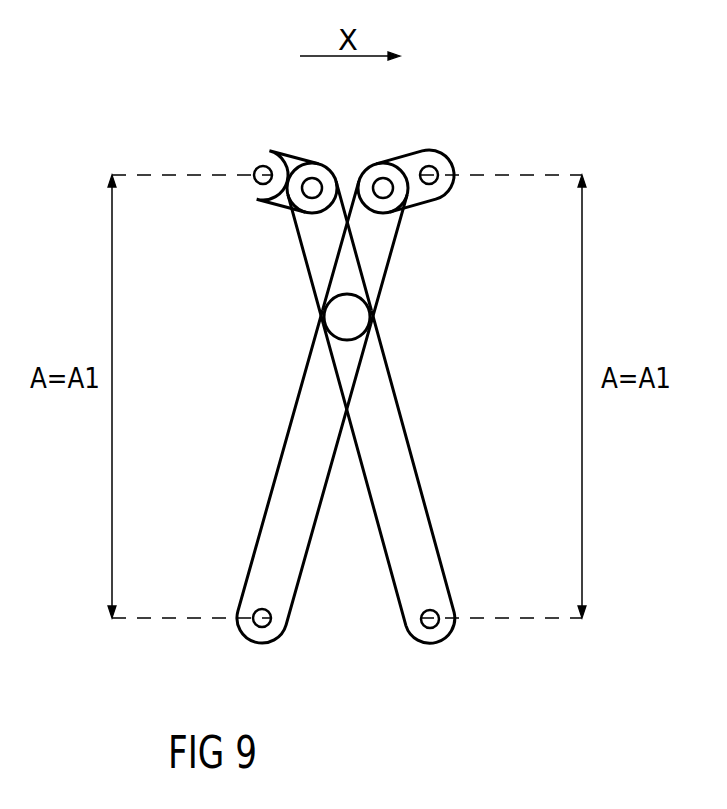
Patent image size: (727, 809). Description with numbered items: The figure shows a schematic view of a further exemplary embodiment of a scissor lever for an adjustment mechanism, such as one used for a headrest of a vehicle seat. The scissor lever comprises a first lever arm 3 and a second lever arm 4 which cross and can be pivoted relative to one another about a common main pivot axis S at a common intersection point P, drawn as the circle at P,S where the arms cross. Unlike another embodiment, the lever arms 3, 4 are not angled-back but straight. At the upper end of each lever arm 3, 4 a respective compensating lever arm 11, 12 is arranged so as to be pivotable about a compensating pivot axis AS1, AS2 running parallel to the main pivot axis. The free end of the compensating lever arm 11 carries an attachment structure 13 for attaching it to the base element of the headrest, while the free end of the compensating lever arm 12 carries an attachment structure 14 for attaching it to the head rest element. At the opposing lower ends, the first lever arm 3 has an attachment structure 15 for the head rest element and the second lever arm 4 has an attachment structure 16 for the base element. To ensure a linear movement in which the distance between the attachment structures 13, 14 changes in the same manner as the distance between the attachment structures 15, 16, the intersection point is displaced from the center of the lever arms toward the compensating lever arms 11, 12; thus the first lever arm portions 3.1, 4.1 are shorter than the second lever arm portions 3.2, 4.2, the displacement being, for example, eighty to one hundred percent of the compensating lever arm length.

The first lever arm 3 is at (347, 380).
The first lever arm portion 3.1 is at (317, 245).
The second lever arm portion 3.2 is at (418, 503).
The second lever arm 4 is at (341, 380).
The first lever arm portion 4.1 is at (378, 252).
The second lever arm portion 4.2 is at (271, 502).
The compensating lever arm 11 is at (249, 138).
The compensating lever arm 12 is at (443, 138).
The attachment structure 13 is at (263, 174).
The attachment structure 14 is at (429, 175).
The attachment structure 15 is at (437, 625).
The attachment structure 16 is at (260, 622).
The compensating pivot axis AS1 is at (312, 187).
The compensating pivot axis AS2 is at (383, 187).
The intersection point and main pivot axis P,S is at (355, 318).